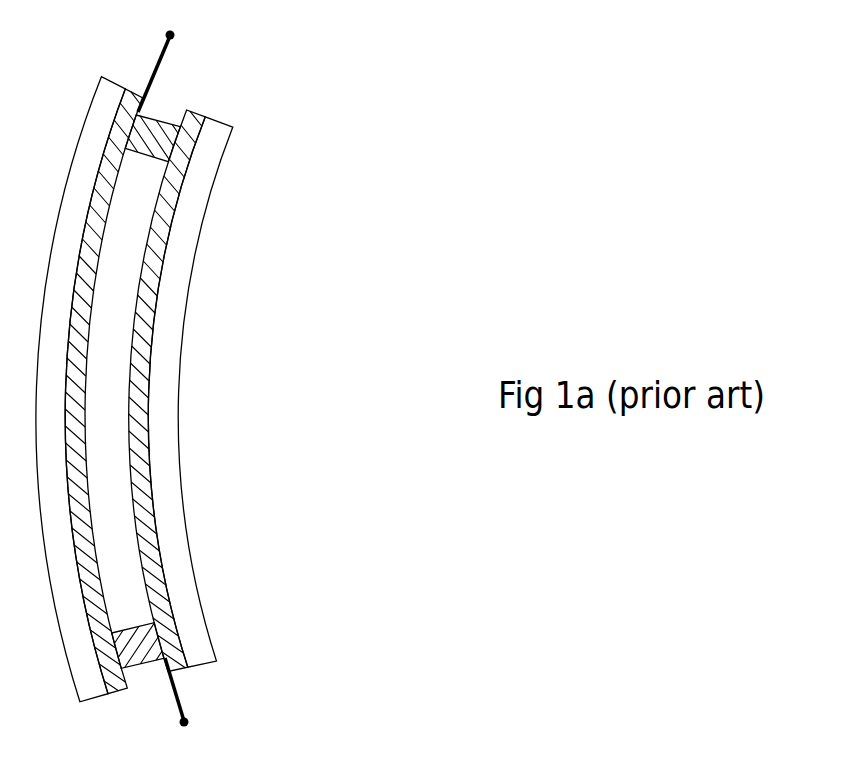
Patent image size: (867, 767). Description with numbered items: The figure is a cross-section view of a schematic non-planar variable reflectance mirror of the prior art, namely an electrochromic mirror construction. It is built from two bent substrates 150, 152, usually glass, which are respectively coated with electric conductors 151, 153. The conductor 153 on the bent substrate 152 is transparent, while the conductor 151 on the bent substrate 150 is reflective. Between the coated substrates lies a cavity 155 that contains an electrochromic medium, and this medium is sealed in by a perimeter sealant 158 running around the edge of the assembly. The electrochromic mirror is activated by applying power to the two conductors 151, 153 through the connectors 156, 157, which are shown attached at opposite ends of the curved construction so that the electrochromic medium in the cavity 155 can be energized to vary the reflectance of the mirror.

The bent substrate 150 is at (178, 552).
The electric conductor 151 is at (145, 490).
The bent substrate 152 is at (70, 215).
The electric conductor 153 is at (88, 299).
The cavity 155 is at (109, 377).
The connector 156 is at (167, 72).
The connector 157 is at (205, 699).
The perimeter sealant 158 is at (143, 643).